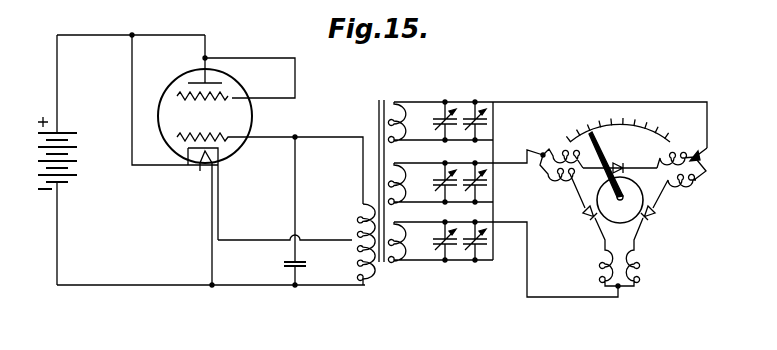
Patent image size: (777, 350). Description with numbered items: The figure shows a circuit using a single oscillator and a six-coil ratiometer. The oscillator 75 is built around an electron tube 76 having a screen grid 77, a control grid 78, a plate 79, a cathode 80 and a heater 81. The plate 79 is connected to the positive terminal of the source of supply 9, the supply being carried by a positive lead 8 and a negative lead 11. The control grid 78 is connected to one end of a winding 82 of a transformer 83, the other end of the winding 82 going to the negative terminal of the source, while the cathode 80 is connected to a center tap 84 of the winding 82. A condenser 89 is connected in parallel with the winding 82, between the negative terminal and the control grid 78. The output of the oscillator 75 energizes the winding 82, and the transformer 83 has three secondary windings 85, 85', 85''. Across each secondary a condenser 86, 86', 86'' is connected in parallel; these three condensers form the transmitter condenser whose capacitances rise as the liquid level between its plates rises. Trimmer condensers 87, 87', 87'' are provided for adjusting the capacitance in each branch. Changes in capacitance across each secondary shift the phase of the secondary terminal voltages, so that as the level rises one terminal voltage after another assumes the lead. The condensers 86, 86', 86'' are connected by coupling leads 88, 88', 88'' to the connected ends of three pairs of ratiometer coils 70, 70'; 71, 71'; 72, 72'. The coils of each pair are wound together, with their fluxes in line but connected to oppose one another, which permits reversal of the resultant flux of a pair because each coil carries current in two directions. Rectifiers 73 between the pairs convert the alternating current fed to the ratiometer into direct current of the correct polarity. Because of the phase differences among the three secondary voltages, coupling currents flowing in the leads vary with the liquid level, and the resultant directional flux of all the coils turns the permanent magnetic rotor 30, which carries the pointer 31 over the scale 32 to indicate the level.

The positive supply lead 8 is at (93, 35).
The source of supply 9 is at (36, 158).
The negative supply lead 11 is at (97, 285).
The oscillator 75 is at (193, 73).
The electron tube 76 is at (173, 97).
The screen grid 77 is at (230, 97).
The control grid 78 is at (175, 136).
The plate 79 is at (210, 81).
The cathode 80 is at (200, 171).
The heater 81 is at (207, 168).
The winding 82 is at (368, 280).
The transformer 83 is at (372, 141).
The center tap 84 is at (350, 240).
The condenser 89 is at (284, 268).
The secondary winding 85 is at (440, 108).
The secondary winding 85' is at (440, 181).
The secondary winding 85'' is at (440, 230).
The condenser 86 is at (444, 110).
The condenser 86' is at (444, 191).
The condenser 86'' is at (434, 250).
The trimmer condenser 87 is at (475, 110).
The trimmer condenser 87' is at (476, 171).
The trimmer condenser 87'' is at (473, 250).
The coupling lead 88 is at (550, 116).
The coupling lead 88' is at (519, 145).
The coupling lead 88'' is at (555, 248).
The ratiometer coil 70 is at (559, 186).
The ratiometer coil 70' is at (563, 144).
The ratiometer coil 71 is at (682, 137).
The ratiometer coil 71' is at (697, 184).
The ratiometer coil 72 is at (592, 253).
The ratiometer coil 72' is at (653, 252).
The rectifier 73 is at (620, 166).
The permanent magnetic rotor 30 is at (639, 191).
The pointer 31 is at (606, 168).
The scale 32 is at (648, 124).